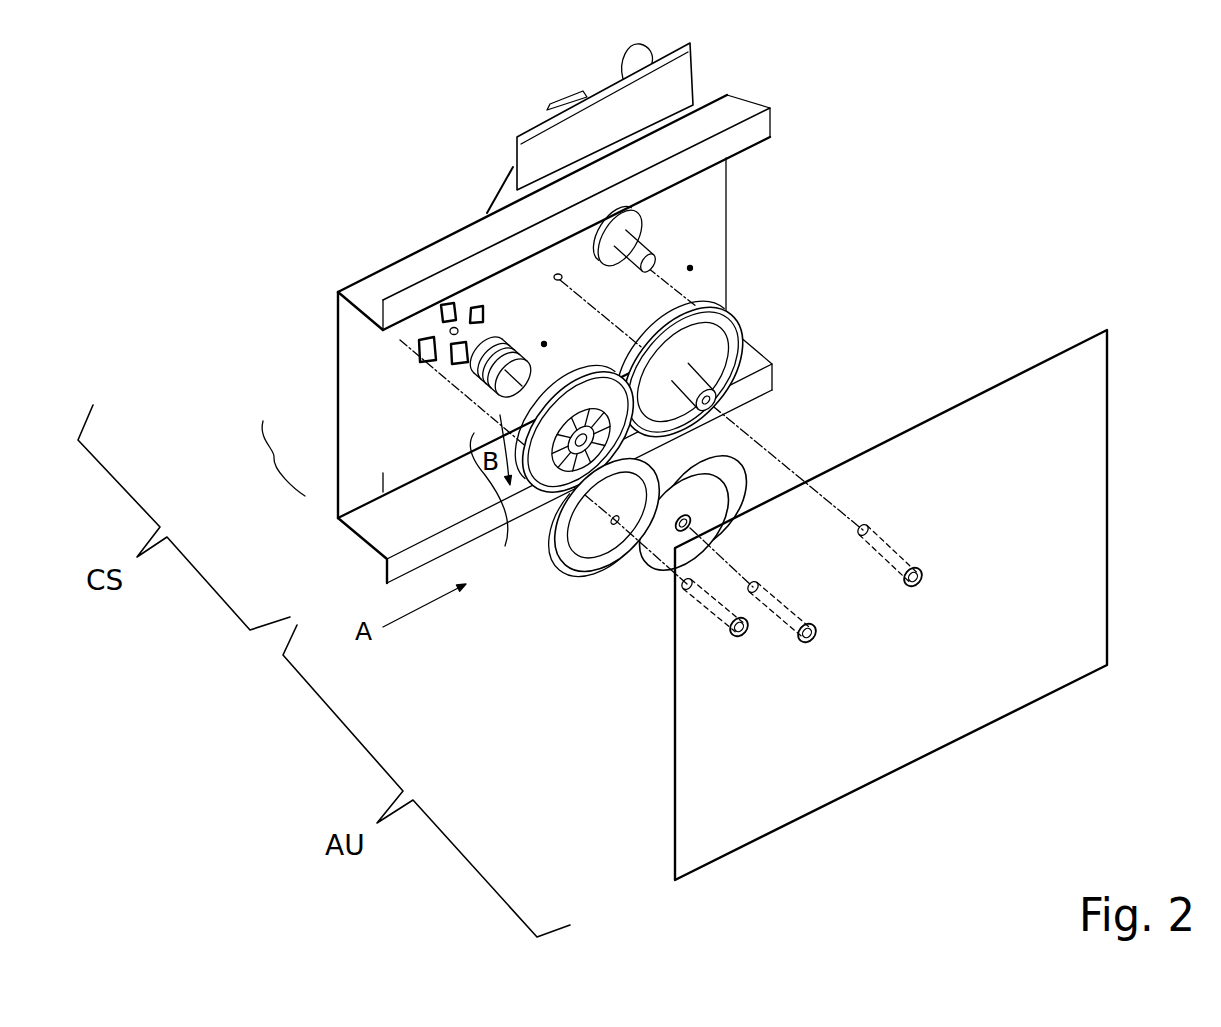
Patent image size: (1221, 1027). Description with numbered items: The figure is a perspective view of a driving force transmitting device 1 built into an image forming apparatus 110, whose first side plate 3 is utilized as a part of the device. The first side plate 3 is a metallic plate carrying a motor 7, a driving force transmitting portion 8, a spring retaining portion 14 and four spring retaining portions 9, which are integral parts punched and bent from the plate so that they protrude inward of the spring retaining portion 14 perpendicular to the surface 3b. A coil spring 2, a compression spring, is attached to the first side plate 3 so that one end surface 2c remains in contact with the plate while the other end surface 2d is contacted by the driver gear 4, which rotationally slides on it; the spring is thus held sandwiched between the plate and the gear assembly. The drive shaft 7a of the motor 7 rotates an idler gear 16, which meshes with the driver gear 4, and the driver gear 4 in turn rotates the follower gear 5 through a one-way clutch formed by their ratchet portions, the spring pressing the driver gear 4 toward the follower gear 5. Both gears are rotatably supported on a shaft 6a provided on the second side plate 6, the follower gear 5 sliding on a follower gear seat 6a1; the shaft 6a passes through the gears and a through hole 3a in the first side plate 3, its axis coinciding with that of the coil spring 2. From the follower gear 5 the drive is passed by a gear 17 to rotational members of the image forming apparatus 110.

The image forming apparatus 110 is at (407, 180).
The driving force transmitting device 1 is at (512, 662).
The coil spring 2 is at (274, 458).
The end surface of coil spring 2c is at (488, 380).
The other end surface of coil spring 2d is at (485, 410).
The first side plate 3 is at (407, 262).
The through hole 3a is at (458, 311).
The surface of first side plate 3b is at (383, 473).
The driver gear 4 is at (634, 462).
The follower gear 5 is at (720, 500).
The second side plate 6 is at (803, 780).
The shaft 6a is at (780, 621).
The follower gear seat 6a1 is at (811, 641).
The motor 7 is at (490, 210).
The drive shaft 7a is at (641, 257).
The driving force transmitting portion 8 is at (562, 585).
The spring retaining portions 9 is at (444, 310).
The spring retaining portion 14 is at (417, 327).
The idler gear 16 is at (700, 328).
The gear 17 is at (600, 568).